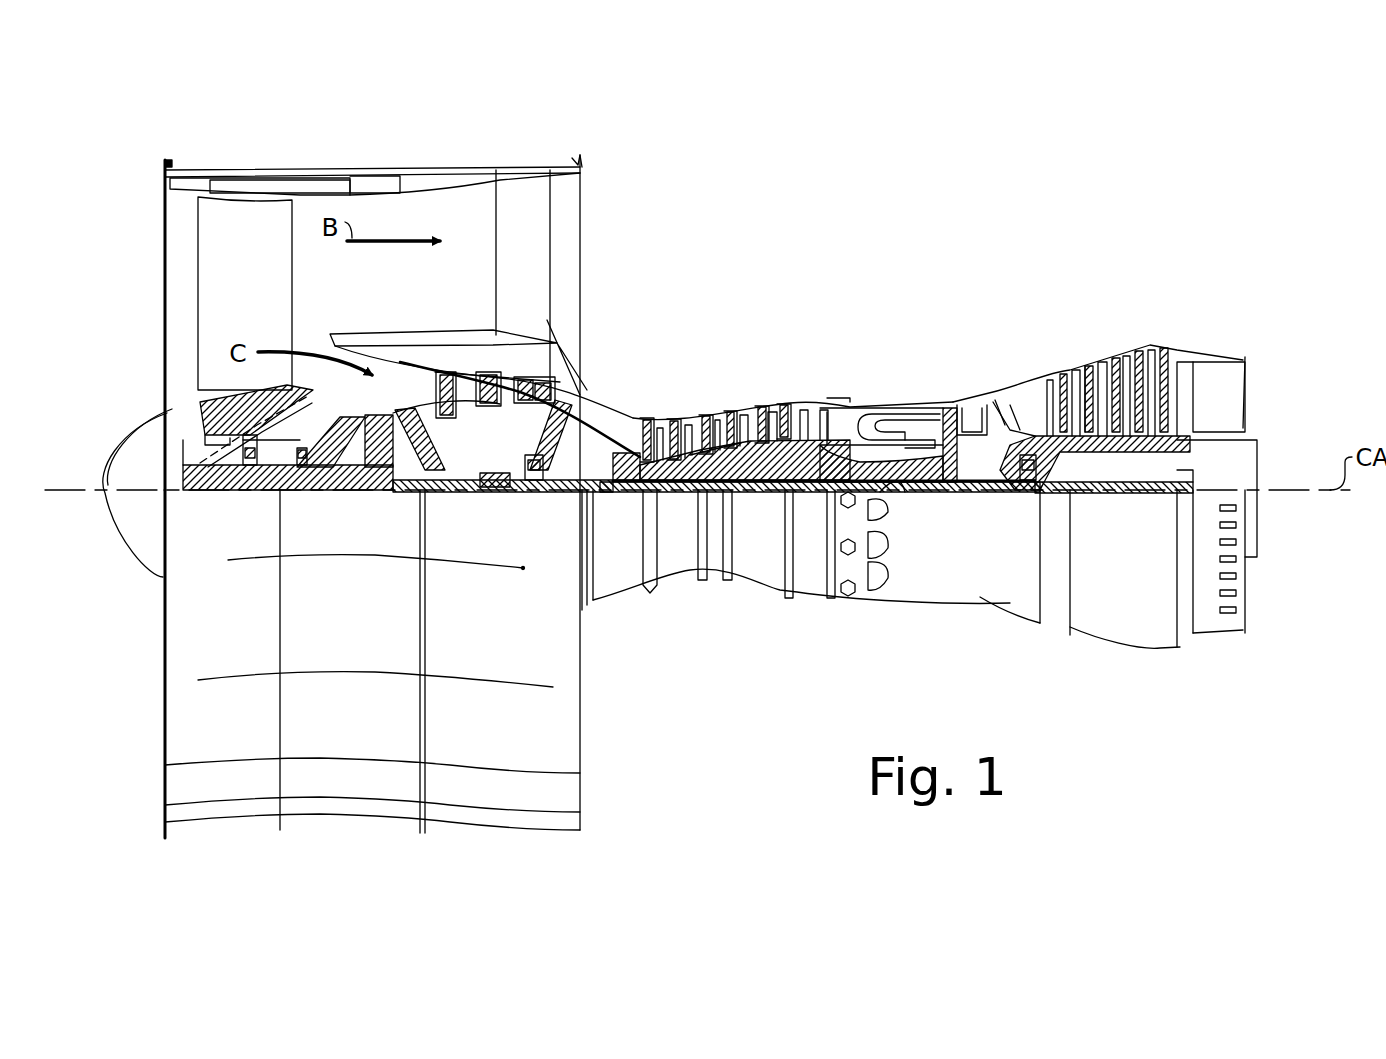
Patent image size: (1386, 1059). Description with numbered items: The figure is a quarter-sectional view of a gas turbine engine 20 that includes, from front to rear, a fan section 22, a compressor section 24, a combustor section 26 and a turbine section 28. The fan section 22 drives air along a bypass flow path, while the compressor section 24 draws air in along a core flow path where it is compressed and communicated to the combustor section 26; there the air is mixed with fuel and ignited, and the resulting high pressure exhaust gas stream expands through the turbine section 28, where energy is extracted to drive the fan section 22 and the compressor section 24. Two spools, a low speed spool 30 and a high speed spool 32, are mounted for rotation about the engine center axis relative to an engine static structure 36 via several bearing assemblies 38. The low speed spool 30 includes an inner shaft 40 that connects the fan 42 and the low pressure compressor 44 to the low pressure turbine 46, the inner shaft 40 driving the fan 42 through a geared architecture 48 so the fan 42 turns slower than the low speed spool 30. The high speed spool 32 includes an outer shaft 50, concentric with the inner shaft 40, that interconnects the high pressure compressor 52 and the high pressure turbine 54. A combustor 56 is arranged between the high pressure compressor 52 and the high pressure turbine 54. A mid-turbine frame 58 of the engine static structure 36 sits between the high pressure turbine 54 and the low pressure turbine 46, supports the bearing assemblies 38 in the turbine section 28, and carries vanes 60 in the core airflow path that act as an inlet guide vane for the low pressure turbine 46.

The gas turbine engine 20 is at (1078, 177).
The fan section 22 is at (398, 133).
The compressor section 24 is at (427, 283).
The combustor section 26 is at (945, 283).
The turbine section 28 is at (1200, 283).
The low speed spool 30 is at (757, 505).
The high speed spool 32 is at (790, 463).
The engine static structure 36 is at (810, 605).
The bearing assemblies 38 is at (252, 490).
The inner shaft 40 is at (600, 495).
The fan 42 is at (231, 278).
The low pressure compressor section 44 is at (505, 383).
The low pressure turbine section 46 is at (1113, 370).
The geared architecture 48 is at (377, 490).
The outer shaft 50 is at (893, 477).
The high pressure compressor section 52 is at (712, 460).
The high pressure turbine section 54 is at (972, 400).
The combustor 56 is at (885, 425).
The mid-turbine frame 58 is at (1013, 382).
The vanes 60 is at (1012, 417).